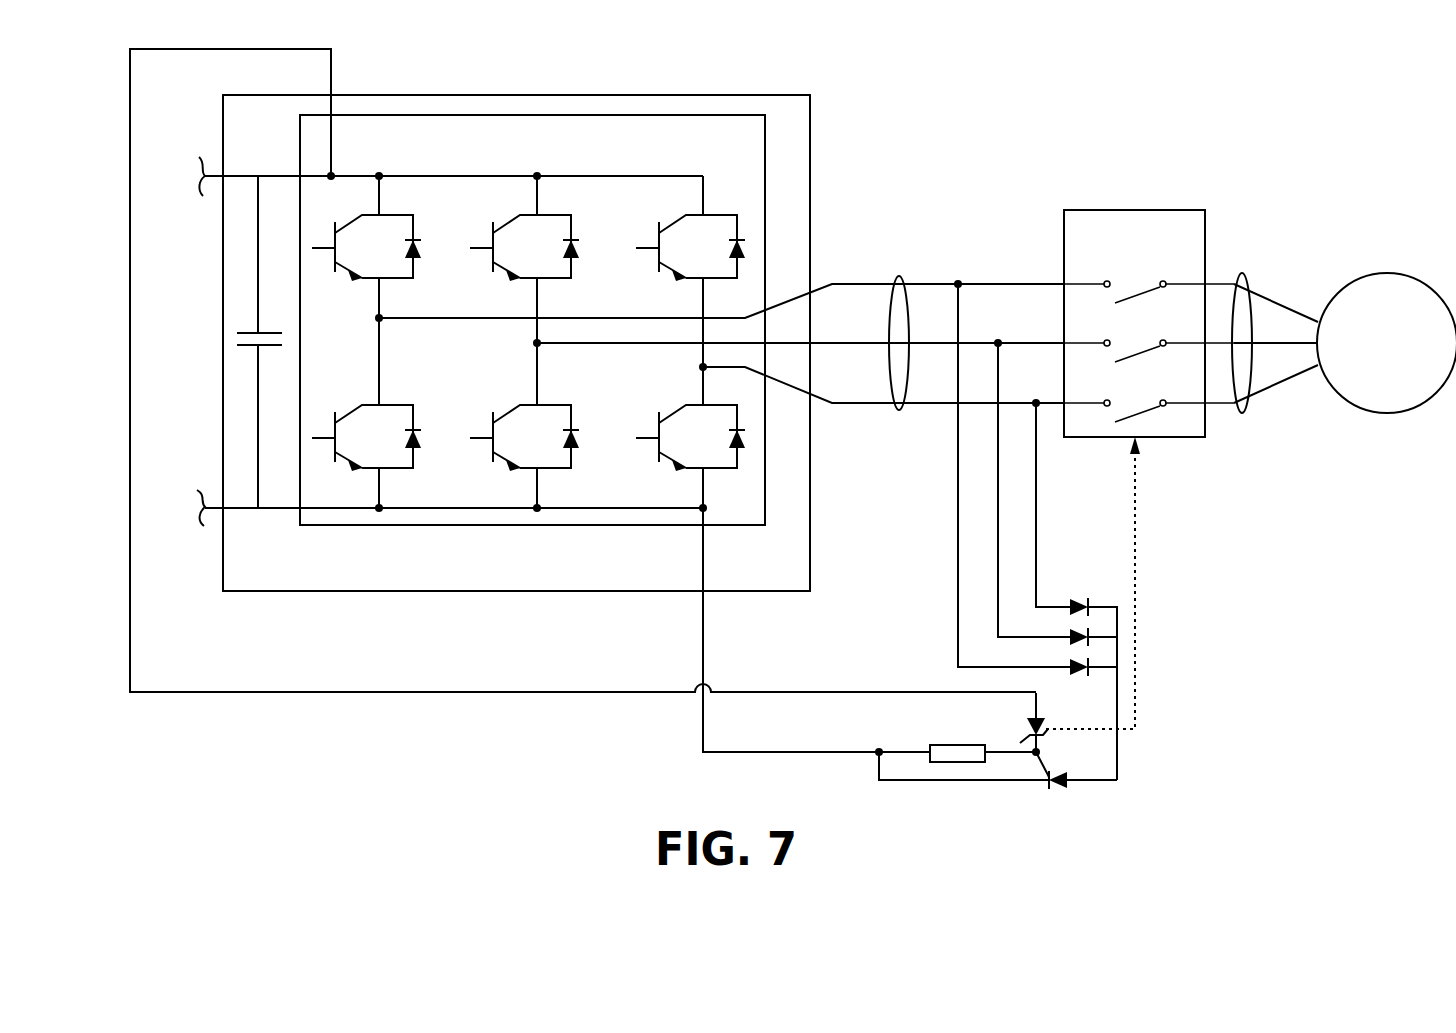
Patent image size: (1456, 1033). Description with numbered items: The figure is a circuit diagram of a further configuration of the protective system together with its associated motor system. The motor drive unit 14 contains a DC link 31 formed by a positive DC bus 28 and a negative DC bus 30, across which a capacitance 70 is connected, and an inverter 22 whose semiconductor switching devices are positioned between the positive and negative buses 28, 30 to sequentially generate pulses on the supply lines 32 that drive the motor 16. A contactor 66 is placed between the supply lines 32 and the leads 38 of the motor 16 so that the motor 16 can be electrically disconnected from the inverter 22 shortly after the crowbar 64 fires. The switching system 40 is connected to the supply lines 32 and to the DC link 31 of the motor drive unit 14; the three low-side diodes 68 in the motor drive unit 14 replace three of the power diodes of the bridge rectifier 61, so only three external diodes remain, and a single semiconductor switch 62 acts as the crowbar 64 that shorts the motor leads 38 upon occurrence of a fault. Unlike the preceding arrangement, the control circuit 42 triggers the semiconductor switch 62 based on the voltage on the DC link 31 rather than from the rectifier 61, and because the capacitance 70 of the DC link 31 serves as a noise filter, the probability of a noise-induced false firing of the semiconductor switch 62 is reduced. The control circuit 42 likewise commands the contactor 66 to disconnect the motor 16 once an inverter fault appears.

The motor drive unit 14 is at (525, 591).
The motor 16 is at (1373, 374).
The inverter 22 is at (530, 115).
The positive DC bus 28 is at (231, 176).
The negative DC bus 30 is at (236, 508).
The DC link 31 is at (207, 140).
The supply lines 32 is at (899, 276).
The motor leads 38 is at (1242, 273).
The switching system 40 is at (1058, 807).
The control circuit 42 is at (1157, 680).
The bridge rectifier 61 is at (1068, 578).
The semiconductor switch 62 is at (1060, 786).
The crowbar 64 is at (943, 652).
The contactor 66 is at (1135, 210).
The low-side diodes 68 is at (364, 516).
The capacitance 70 is at (239, 357).